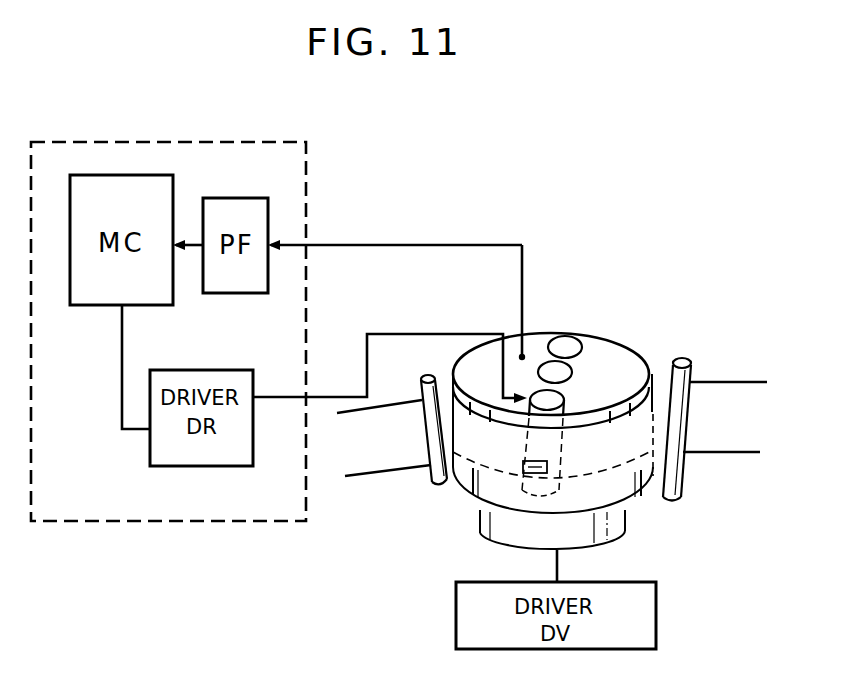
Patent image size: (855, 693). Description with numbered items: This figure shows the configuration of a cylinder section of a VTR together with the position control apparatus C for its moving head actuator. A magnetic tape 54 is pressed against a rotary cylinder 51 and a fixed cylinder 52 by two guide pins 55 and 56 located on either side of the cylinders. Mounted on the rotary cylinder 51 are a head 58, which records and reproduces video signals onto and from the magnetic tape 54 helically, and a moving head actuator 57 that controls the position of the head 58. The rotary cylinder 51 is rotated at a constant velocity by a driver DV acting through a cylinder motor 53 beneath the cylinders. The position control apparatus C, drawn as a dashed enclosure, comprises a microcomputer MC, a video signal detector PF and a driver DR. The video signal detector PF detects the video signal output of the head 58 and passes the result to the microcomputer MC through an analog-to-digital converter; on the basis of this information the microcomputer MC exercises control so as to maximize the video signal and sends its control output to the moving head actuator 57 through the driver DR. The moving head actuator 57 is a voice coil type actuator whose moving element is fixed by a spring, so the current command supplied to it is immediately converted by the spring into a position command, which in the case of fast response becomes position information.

The position control apparatus C is at (306, 197).
The rotary cylinder 51 is at (627, 340).
The fixed cylinder 52 is at (643, 497).
The cylinder motor 53 is at (600, 543).
The magnetic tape 54 is at (552, 429).
The guide pin 55 is at (689, 357).
The guide pin 56 is at (425, 378).
The moving head actuator 57 is at (573, 334).
The head 58 is at (548, 466).